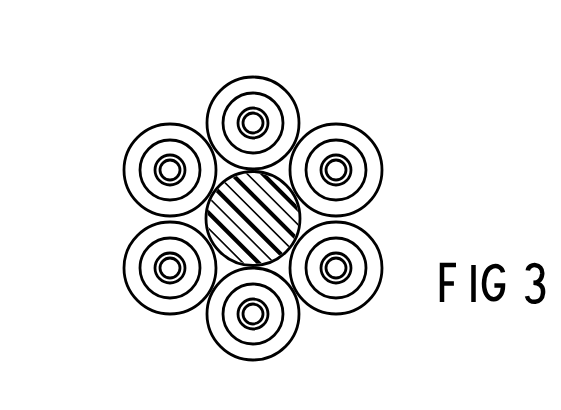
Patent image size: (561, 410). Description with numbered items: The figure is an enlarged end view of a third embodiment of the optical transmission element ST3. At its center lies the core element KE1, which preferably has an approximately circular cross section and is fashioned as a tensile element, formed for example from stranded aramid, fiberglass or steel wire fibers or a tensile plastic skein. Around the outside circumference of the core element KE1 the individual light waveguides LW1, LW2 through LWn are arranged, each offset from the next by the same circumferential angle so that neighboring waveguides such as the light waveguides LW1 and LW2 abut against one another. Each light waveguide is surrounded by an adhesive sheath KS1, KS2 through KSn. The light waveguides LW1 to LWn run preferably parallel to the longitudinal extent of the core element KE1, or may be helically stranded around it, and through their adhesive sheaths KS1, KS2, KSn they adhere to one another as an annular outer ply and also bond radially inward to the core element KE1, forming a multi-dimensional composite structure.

The optical transmission element ST3 is at (261, 190).
The core element KE1 is at (283, 223).
The adhesive sheath KS1 is at (260, 86).
The light waveguide LW1 is at (235, 96).
The adhesive sheath KS2 is at (372, 152).
The light waveguide LW2 is at (343, 142).
The adhesive sheath KSn is at (33, 151).
The light waveguide LWn is at (150, 136).